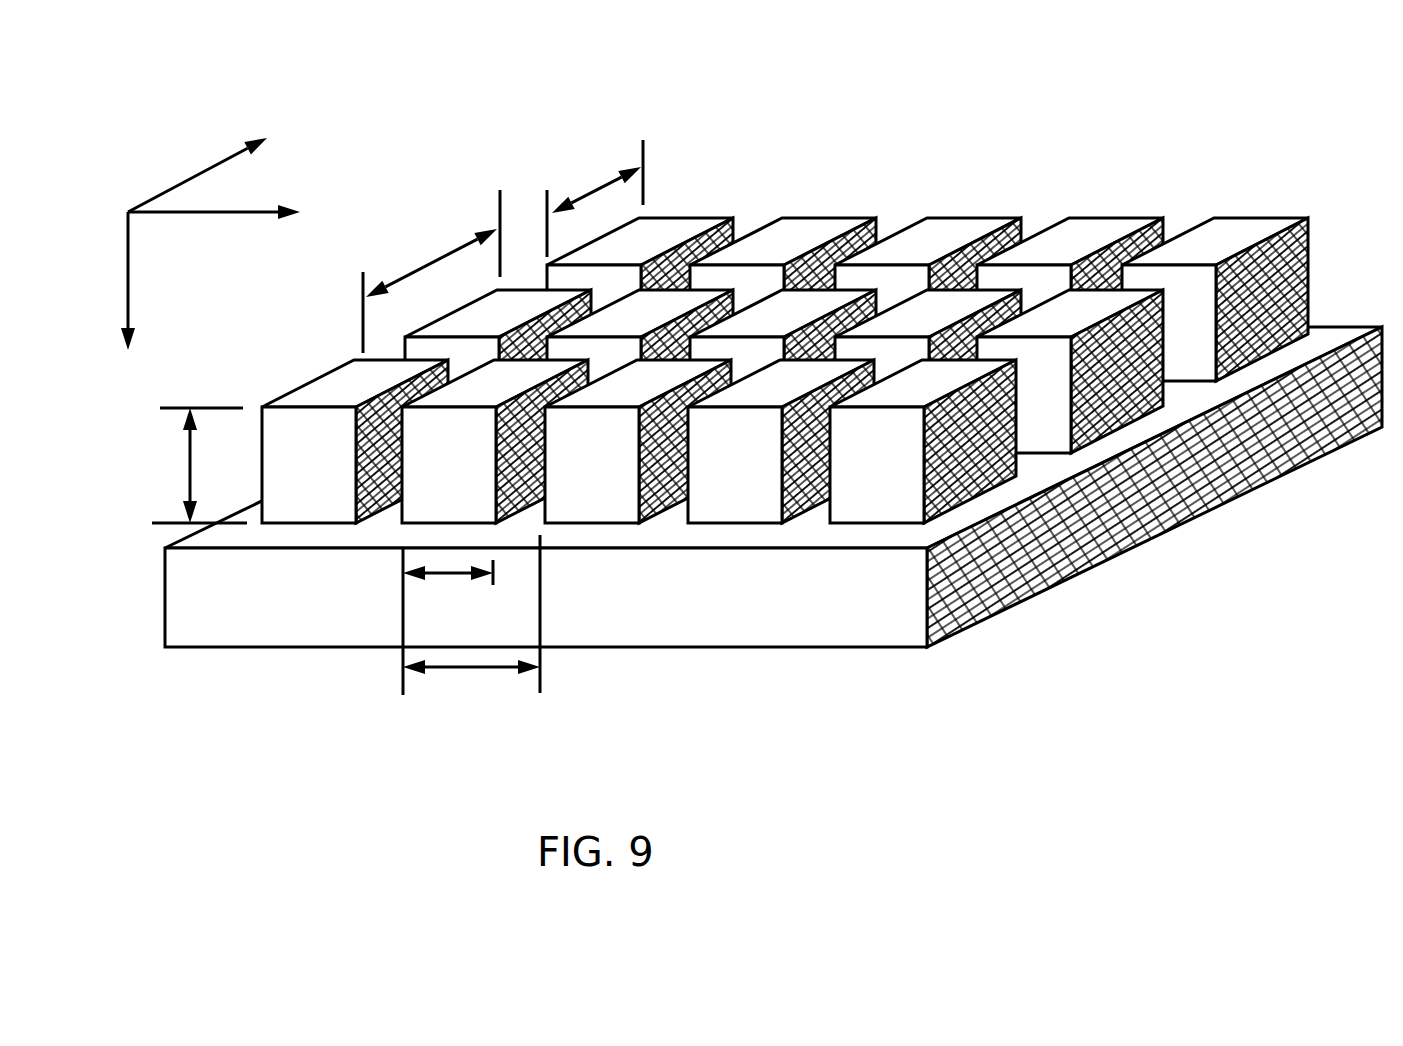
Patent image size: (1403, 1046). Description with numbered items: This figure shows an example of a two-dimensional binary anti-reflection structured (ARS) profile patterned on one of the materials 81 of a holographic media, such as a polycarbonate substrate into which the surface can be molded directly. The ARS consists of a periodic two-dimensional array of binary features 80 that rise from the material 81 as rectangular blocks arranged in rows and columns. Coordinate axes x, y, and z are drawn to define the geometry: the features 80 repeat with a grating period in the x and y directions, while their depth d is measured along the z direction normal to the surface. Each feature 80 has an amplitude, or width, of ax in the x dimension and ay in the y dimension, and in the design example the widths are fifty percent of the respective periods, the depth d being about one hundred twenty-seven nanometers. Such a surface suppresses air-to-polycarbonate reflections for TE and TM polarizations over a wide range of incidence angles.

The binary features 80 is at (1245, 227).
The material of the holographic media 81 is at (733, 600).
The depth of the structures d is at (191, 465).
The amplitude of each structure in the x dimension ax is at (595, 195).
The amplitude of each structure in the y dimension ay is at (448, 587).
The x direction x is at (197, 161).
The y direction y is at (214, 234).
The z direction z is at (107, 281).